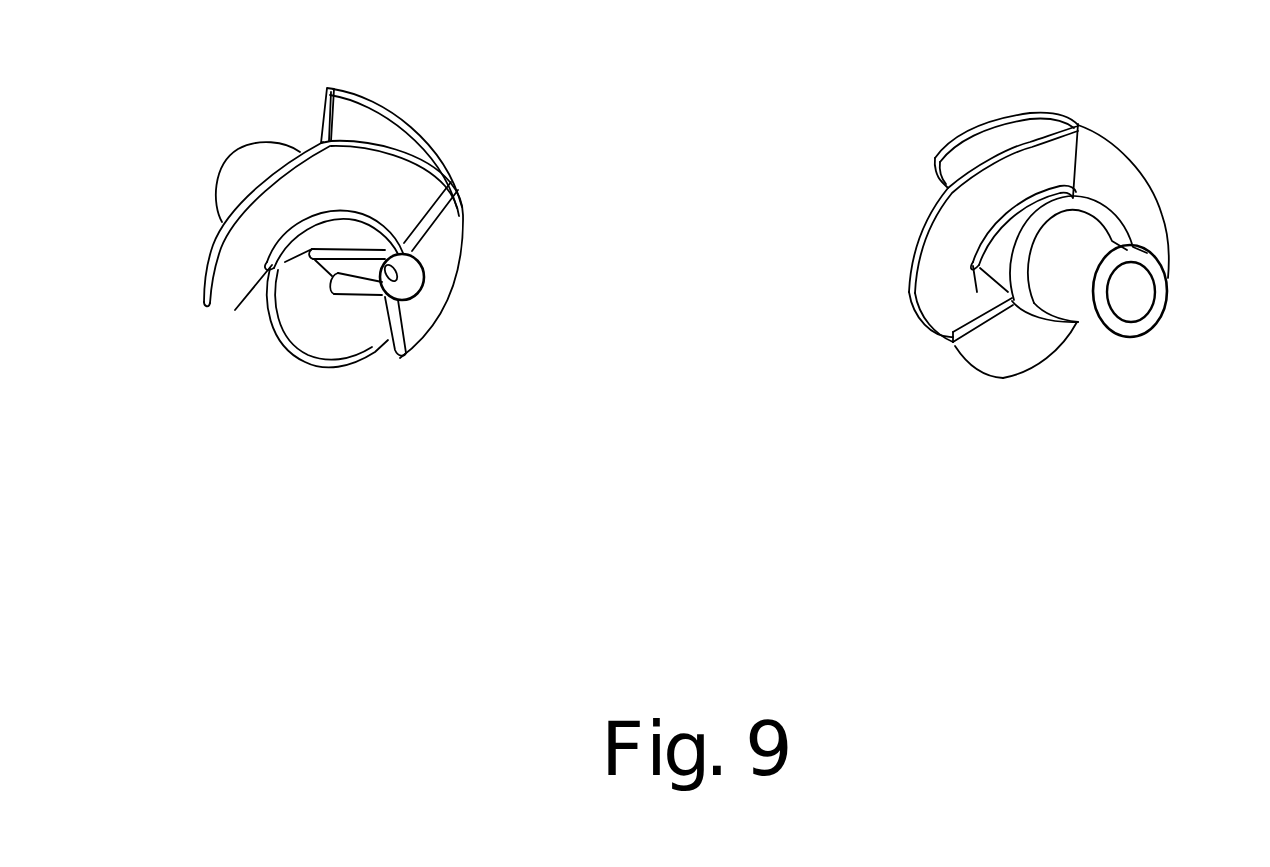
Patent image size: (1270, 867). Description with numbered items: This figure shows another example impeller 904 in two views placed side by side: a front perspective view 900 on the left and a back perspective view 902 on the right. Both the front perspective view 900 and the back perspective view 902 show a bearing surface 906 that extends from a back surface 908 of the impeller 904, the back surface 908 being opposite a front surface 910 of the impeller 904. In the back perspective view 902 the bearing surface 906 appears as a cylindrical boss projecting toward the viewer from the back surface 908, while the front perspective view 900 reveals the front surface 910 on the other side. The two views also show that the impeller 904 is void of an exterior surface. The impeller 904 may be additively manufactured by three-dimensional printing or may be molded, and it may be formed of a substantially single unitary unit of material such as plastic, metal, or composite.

The front perspective view 900 is at (125, 410).
The back perspective view 902 is at (873, 410).
The impeller 904 is at (170, 75).
The bearing surface 906 is at (217, 180).
The back surface 908 is at (325, 85).
The front surface 910 is at (411, 365).